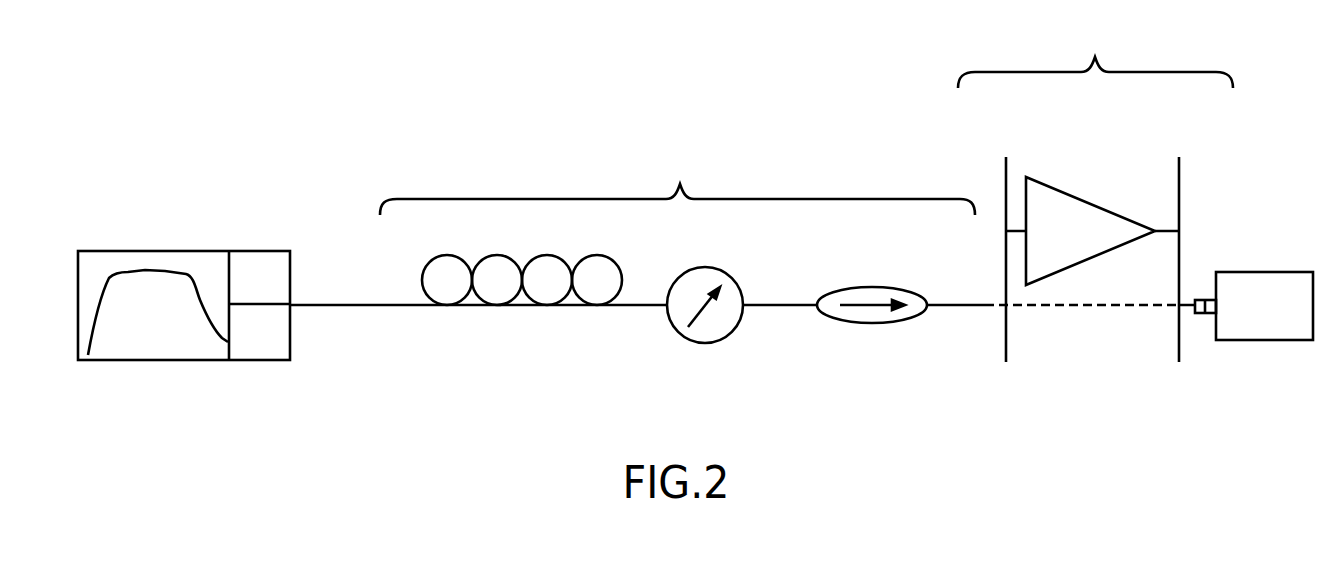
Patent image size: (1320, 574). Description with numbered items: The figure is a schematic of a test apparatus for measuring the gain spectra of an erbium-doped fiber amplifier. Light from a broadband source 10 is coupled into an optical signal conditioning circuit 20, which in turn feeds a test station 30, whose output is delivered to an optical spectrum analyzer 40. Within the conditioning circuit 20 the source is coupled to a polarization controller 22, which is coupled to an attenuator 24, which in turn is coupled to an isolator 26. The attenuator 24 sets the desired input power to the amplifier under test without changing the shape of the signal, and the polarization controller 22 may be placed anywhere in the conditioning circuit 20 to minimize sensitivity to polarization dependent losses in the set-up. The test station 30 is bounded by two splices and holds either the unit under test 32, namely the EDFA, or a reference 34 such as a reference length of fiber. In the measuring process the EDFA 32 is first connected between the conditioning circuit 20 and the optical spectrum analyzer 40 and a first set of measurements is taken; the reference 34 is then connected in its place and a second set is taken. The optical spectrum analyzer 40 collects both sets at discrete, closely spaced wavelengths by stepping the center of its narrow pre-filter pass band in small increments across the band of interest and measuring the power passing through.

The broadband source 10 is at (162, 251).
The optical signal conditioning circuit 20 is at (677, 285).
The polarization controller 22 is at (505, 305).
The attenuator 24 is at (702, 342).
The isolator 26 is at (878, 323).
The test station 30 is at (1095, 191).
The unit under test 32 is at (1068, 190).
The reference 34 is at (1092, 305).
The optical spectrum analyzer 40 is at (1265, 272).